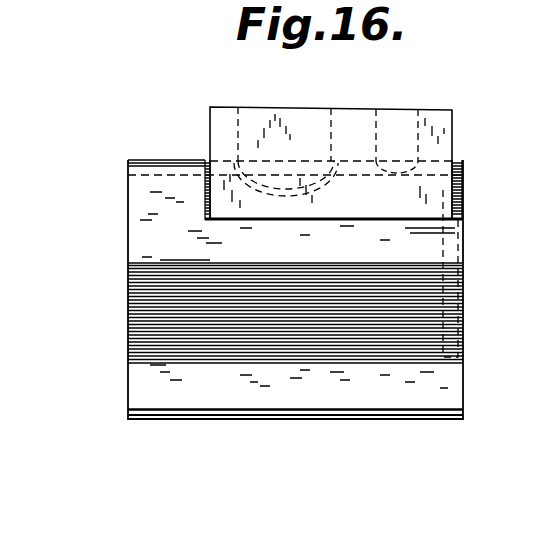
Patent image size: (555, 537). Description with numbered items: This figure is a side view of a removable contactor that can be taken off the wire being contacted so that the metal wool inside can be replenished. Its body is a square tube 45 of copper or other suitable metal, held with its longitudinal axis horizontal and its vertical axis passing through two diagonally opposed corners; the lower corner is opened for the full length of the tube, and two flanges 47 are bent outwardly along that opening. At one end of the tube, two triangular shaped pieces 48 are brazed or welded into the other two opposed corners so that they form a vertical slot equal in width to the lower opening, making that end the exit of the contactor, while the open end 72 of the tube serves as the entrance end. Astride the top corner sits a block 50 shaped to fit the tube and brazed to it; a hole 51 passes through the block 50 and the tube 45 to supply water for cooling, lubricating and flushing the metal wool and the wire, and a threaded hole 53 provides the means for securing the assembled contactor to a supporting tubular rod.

The square tube 45 is at (147, 185).
The flanges 47 is at (323, 393).
The triangular shaped pieces 48 is at (554, 248).
The block 50 is at (453, 90).
The hole 51 is at (334, 125).
The threaded hole 53 is at (380, 123).
The open end 72 is at (128, 282).